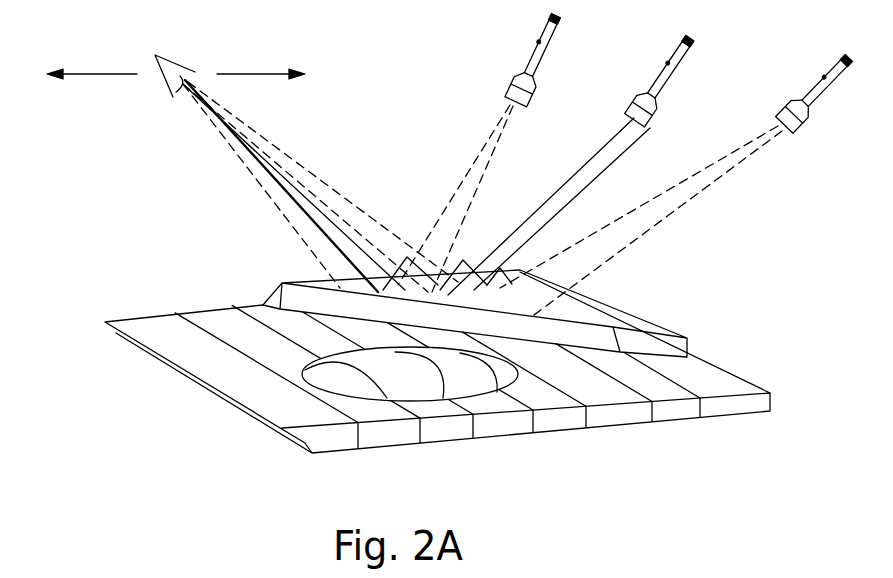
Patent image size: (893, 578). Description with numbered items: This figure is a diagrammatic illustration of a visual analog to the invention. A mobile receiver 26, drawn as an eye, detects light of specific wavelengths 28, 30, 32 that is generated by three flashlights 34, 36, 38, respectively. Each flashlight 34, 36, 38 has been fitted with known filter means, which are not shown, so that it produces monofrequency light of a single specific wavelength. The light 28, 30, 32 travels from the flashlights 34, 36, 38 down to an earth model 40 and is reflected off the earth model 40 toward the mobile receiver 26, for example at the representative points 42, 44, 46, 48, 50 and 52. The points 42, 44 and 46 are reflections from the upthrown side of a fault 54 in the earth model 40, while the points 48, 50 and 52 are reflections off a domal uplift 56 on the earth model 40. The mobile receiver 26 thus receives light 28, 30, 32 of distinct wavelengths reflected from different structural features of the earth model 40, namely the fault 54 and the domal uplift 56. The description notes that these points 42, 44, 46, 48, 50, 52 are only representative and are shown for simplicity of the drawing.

The mobile receiver 26 is at (168, 57).
The light of specific wavelength 28 is at (492, 142).
The light of specific wavelength 30 is at (592, 142).
The light of specific wavelength 32 is at (738, 150).
The flashlight 34 is at (543, 62).
The flashlight 36 is at (668, 82).
The flashlight 38 is at (820, 78).
The earth model 40 is at (737, 378).
The reflection point 42 is at (489, 278).
The reflection point 44 is at (441, 280).
The reflection point 46 is at (381, 276).
The reflection point 48 is at (471, 366).
The reflection point 50 is at (445, 363).
The reflection point 52 is at (392, 362).
The fault 54 is at (690, 338).
The image region 56 is at (333, 378).